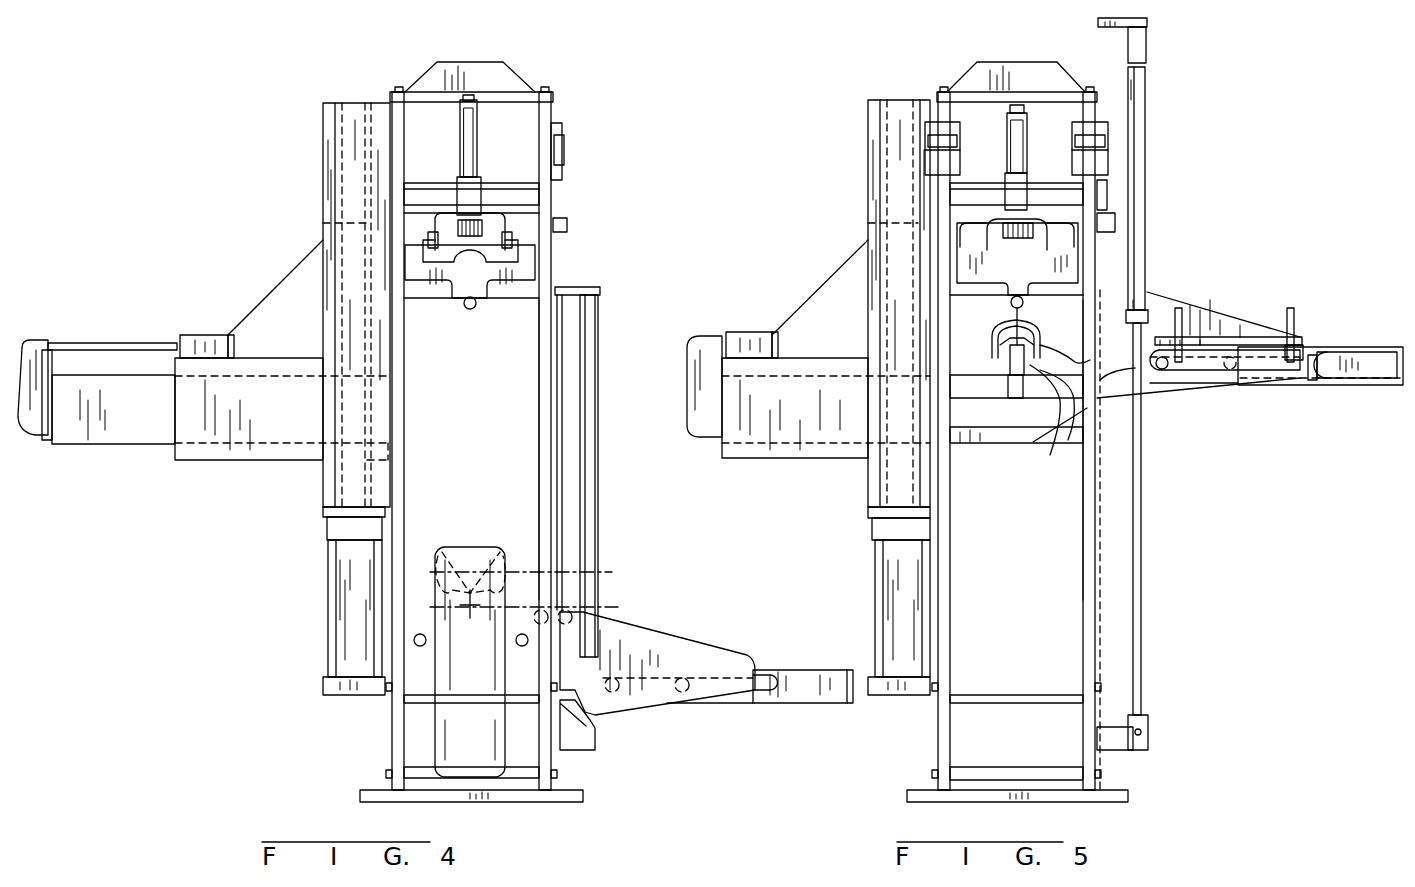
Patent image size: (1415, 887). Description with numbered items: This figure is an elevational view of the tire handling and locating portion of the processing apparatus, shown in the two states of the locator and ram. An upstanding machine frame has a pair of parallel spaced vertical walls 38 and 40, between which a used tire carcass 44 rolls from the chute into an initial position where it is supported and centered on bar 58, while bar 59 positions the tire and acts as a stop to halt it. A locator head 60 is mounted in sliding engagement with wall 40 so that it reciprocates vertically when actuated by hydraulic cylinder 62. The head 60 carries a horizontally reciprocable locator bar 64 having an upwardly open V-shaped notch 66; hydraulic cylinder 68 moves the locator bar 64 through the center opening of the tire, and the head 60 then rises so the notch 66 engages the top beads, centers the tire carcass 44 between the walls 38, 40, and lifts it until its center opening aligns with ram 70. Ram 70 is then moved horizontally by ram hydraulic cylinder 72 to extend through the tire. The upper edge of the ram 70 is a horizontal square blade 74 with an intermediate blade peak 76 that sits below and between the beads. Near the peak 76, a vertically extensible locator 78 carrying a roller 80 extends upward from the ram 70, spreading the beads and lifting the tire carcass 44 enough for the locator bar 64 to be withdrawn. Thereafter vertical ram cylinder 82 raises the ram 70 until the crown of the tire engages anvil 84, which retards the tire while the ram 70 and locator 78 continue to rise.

In FIG. 4, the vertical wall 38 is at (412, 448).
In FIG. 5, the vertical wall 38 is at (948, 552).
In FIG. 4, the vertical wall 40 is at (534, 446).
In FIG. 5, the vertical wall 40 is at (1080, 560).
In FIG. 4, the tire carcass 44 is at (460, 548).
In FIG. 5, the tire carcass 44 is at (1030, 332).
In FIG. 4, the bar 58 is at (466, 770).
In FIG. 5, the bar 58 is at (1022, 768).
In FIG. 4, the bar 59 is at (470, 693).
In FIG. 5, the bar 59 is at (1010, 693).
In FIG. 4, the locator head 60 is at (634, 622).
In FIG. 5, the locator head 60 is at (1210, 308).
In FIG. 4, the hydraulic cylinder 62 is at (598, 368).
In FIG. 5, the hydraulic cylinder 62 is at (1146, 137).
In FIG. 4, the locator bar 64 is at (517, 570).
In FIG. 5, the locator bar 64 is at (1167, 384).
In FIG. 4, the V-shaped notch 66 is at (478, 618).
In FIG. 5, the V-shaped notch 66 is at (1083, 362).
In FIG. 5, the hydraulic cylinder 68 is at (1215, 376).
In FIG. 4, the ram 70 is at (125, 445).
In FIG. 5, the ram 70 is at (990, 445).
In FIG. 4, the ram hydraulic cylinder 72 is at (212, 335).
In FIG. 5, the ram hydraulic cylinder 72 is at (750, 332).
In FIG. 5, the horizontal square blade 74 is at (970, 376).
In FIG. 5, the blade peak 76 is at (1052, 426).
In FIG. 5, the vertically extensible locator 78 is at (1060, 418).
In FIG. 5, the roller 80 is at (1006, 332).
In FIG. 4, the vertical ram cylinder 82 is at (327, 556).
In FIG. 5, the vertical ram cylinder 82 is at (872, 556).
In FIG. 4, the anvil 84 is at (470, 310).
In FIG. 5, the anvil 84 is at (1017, 297).